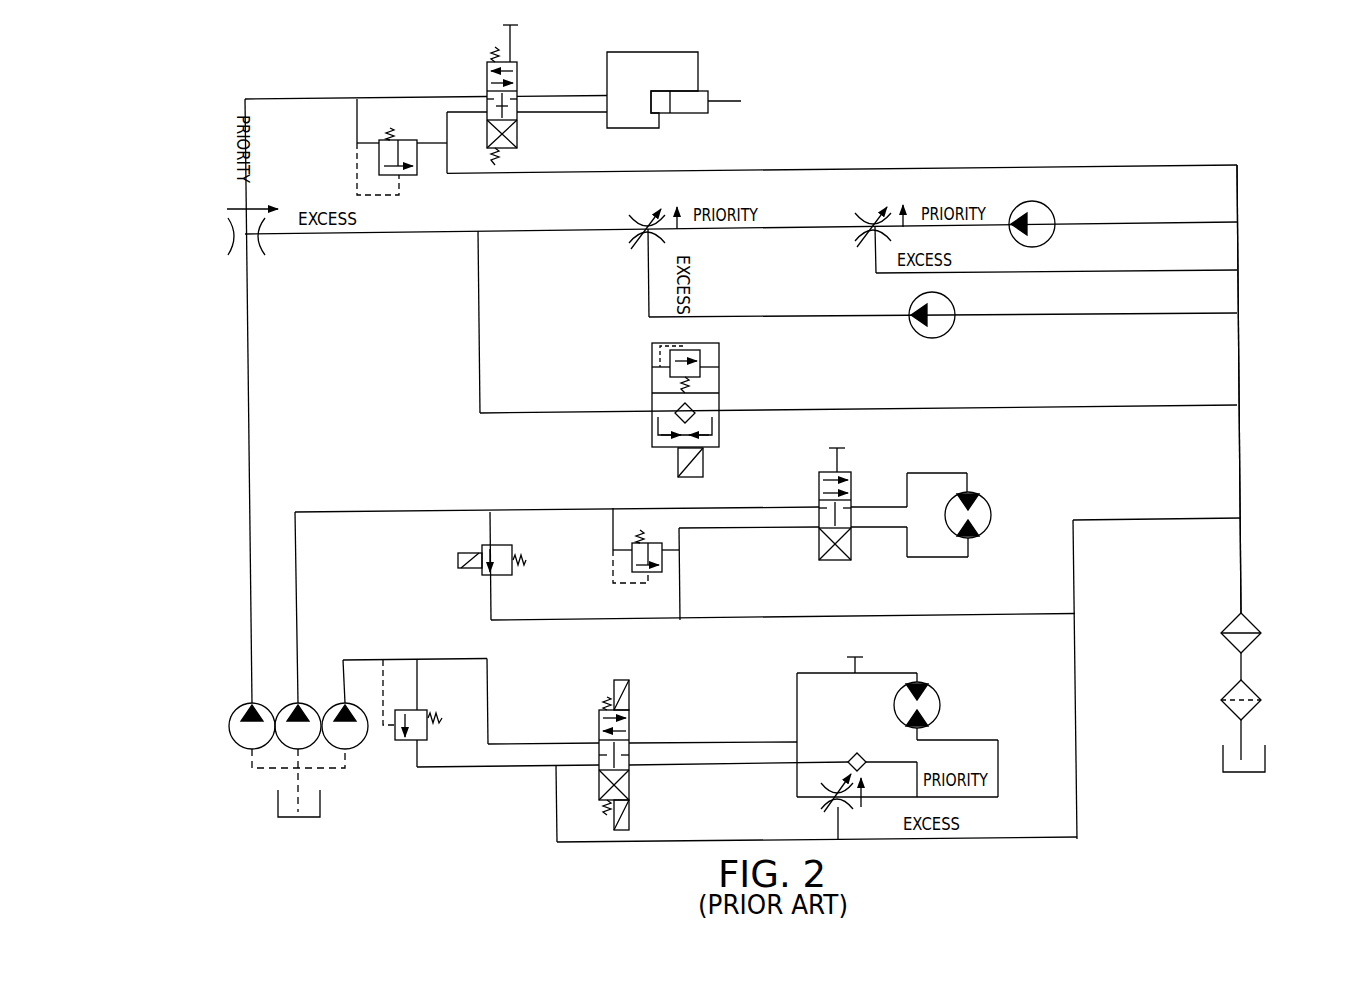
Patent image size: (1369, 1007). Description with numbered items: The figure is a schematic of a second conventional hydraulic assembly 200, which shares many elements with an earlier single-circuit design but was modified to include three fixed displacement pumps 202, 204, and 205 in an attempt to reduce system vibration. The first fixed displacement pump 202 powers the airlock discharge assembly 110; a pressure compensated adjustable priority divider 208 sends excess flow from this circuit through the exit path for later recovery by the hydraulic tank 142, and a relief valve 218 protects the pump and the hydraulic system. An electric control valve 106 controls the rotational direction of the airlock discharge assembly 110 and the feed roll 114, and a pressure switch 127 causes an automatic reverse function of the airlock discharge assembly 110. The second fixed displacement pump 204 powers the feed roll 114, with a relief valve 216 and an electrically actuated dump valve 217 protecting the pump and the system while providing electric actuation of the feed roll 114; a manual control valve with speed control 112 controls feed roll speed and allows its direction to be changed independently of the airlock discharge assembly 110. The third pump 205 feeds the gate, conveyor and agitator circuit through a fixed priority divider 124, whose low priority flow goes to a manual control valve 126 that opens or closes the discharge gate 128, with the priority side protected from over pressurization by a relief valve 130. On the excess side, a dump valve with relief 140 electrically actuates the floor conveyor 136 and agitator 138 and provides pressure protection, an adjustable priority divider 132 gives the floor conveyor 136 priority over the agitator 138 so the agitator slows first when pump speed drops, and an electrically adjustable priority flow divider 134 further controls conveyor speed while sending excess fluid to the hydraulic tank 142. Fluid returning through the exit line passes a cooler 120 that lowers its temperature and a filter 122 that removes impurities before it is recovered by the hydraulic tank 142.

The hydraulic assembly 200 is at (1276, 140).
The electric control valve 106 is at (588, 720).
The airlock discharge assembly 110 is at (954, 694).
The manual control valve with speed control 112 is at (859, 486).
The feed roll 114 is at (998, 512).
The cooler 120 is at (1264, 620).
The filter 122 is at (1273, 692).
The fixed priority divider 124 is at (268, 258).
The manual control valve 126 is at (456, 71).
The pressure switch 127 is at (873, 653).
The discharge gate 128 is at (742, 63).
The relief valve 130 is at (414, 184).
The adjustable priority divider 132 is at (681, 198).
The electrically adjustable priority flow divider 134 is at (906, 196).
The floor conveyor 136 is at (1068, 197).
The agitator 138 is at (963, 341).
The dump valve with relief 140 is at (734, 386).
The hydraulic tank 142 is at (1283, 757).
The first fixed displacement pump 202 is at (363, 690).
The second fixed displacement pump 204 is at (282, 690).
The third fixed displacement pump 205 is at (218, 728).
The pressure compensated adjustable priority divider 208 is at (823, 775).
The relief valve 216 is at (598, 535).
The electrically actuated dump valve 217 is at (471, 535).
The relief valve 218 is at (405, 752).